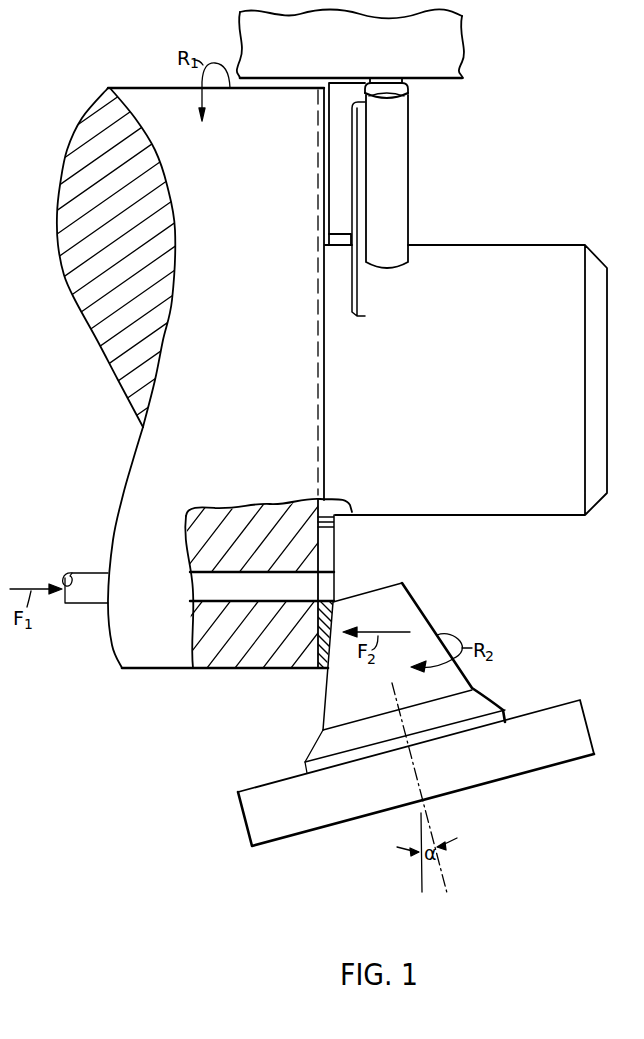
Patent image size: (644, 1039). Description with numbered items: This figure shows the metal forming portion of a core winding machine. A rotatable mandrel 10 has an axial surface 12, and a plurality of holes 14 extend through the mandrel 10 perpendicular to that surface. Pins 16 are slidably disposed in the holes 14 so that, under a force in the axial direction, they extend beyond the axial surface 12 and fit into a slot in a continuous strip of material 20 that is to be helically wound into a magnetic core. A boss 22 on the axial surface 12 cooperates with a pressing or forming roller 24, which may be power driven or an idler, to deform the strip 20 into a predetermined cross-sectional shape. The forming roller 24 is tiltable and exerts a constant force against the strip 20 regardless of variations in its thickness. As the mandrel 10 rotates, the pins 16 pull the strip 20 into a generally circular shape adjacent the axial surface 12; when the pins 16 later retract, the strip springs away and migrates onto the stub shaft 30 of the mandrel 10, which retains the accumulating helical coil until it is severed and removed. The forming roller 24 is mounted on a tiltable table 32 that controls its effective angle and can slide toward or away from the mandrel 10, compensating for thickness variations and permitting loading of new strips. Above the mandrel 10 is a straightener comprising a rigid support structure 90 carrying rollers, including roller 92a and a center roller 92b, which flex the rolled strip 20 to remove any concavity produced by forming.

The mandrel 10 is at (160, 662).
The axial surface 12 is at (323, 319).
The holes 14 is at (213, 610).
The pins 16 is at (332, 586).
The continuous strip of material 20 is at (368, 297).
The boss 22 is at (321, 153).
The pressing roller 24 is at (415, 600).
The stub shaft 30 is at (549, 247).
The tiltable table 32 is at (588, 724).
The rigid support structure 90 is at (457, 42).
The roller 92a is at (397, 163).
The center roller 92b is at (345, 90).